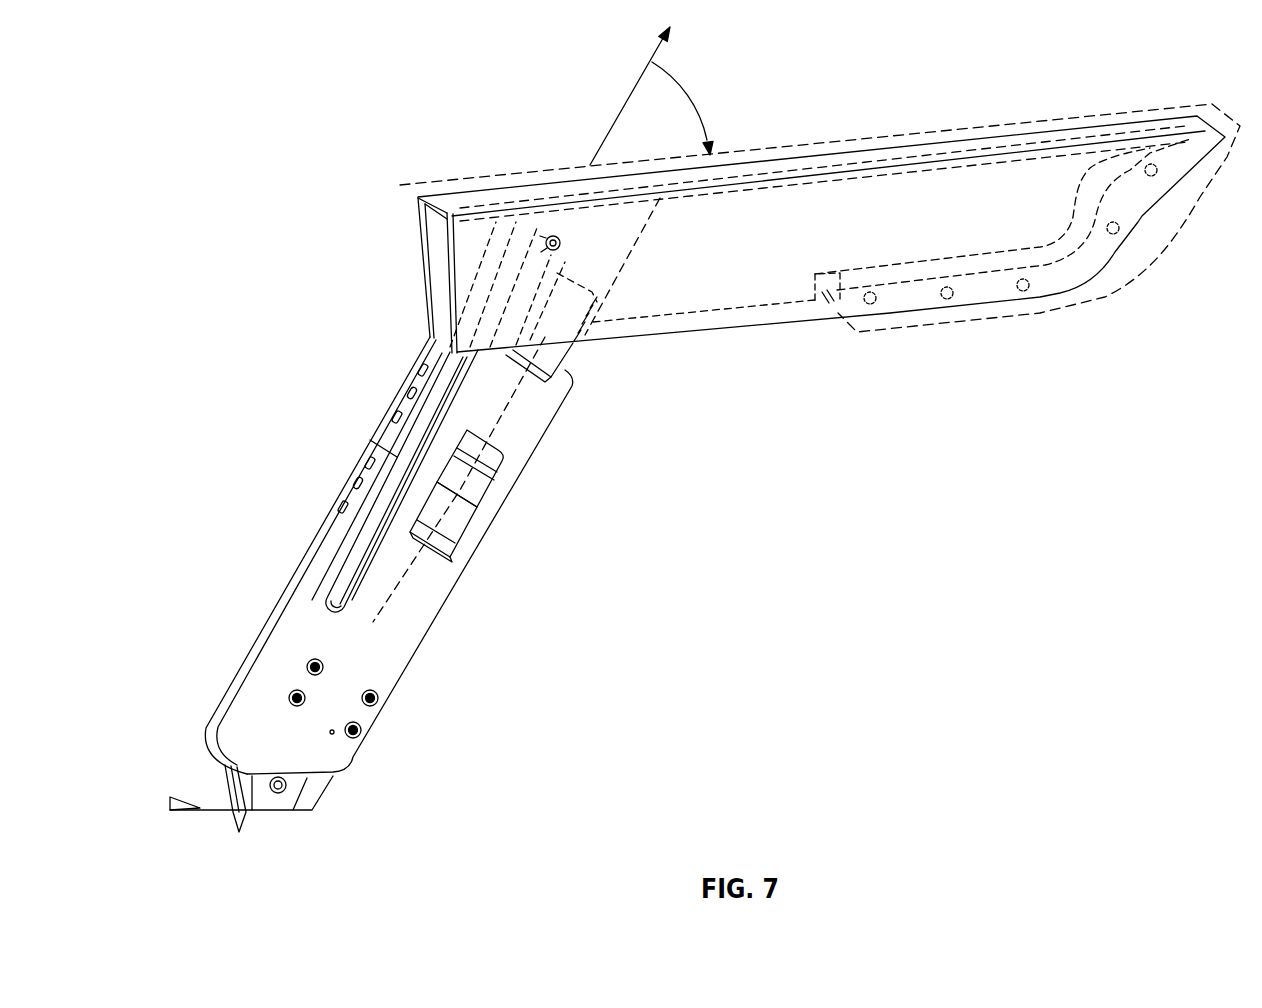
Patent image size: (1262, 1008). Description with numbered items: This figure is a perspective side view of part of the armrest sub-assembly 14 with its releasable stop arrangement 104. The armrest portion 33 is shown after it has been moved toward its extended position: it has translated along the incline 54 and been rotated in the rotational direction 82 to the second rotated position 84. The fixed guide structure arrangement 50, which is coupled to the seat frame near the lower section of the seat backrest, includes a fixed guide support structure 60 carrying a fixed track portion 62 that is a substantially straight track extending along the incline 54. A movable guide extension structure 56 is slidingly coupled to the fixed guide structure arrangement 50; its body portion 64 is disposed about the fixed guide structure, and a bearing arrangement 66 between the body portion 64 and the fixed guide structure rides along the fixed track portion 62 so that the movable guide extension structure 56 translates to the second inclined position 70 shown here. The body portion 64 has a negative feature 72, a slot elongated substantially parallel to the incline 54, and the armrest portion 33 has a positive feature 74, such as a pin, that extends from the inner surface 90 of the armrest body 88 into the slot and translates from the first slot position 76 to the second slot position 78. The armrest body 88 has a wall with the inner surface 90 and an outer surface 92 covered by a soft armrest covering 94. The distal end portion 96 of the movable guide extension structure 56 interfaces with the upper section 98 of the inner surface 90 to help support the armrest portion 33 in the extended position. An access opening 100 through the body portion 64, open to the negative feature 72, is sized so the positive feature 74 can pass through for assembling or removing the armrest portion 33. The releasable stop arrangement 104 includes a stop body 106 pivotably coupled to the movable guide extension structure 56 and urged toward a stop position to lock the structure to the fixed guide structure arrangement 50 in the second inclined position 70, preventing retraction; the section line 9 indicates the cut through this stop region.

The section line 9- 9 is at (545, 344).
The armrest sub-assembly 14 is at (776, 111).
The armrest portion 33 is at (767, 272).
The fixed guide structure arrangement 50 is at (230, 795).
The incline 54 is at (641, 78).
The movable guide extension structure 56 is at (418, 610).
The fixed guide support structure 60 is at (312, 792).
The fixed track portion 62 is at (272, 800).
The body portion 64 is at (393, 658).
The bearing arrangement 66 is at (303, 732).
The second inclined position 70 is at (394, 721).
The negative feature 72 is at (363, 520).
The positive feature 74 is at (560, 246).
The first slot position 76 is at (352, 551).
The second slot position 78 is at (538, 218).
The rotational direction 82 is at (696, 100).
The second rotated position 84 is at (958, 346).
The armrest body 88 is at (893, 222).
The inner surface 90 is at (437, 240).
The outer surface 92 is at (710, 292).
The armrest covering 94 is at (1132, 108).
The distal end portion 96 is at (620, 180).
The upper section 98 is at (420, 194).
The access opening 100 is at (380, 435).
The releasable stop arrangement 104 is at (462, 496).
The stop body 106 is at (449, 523).